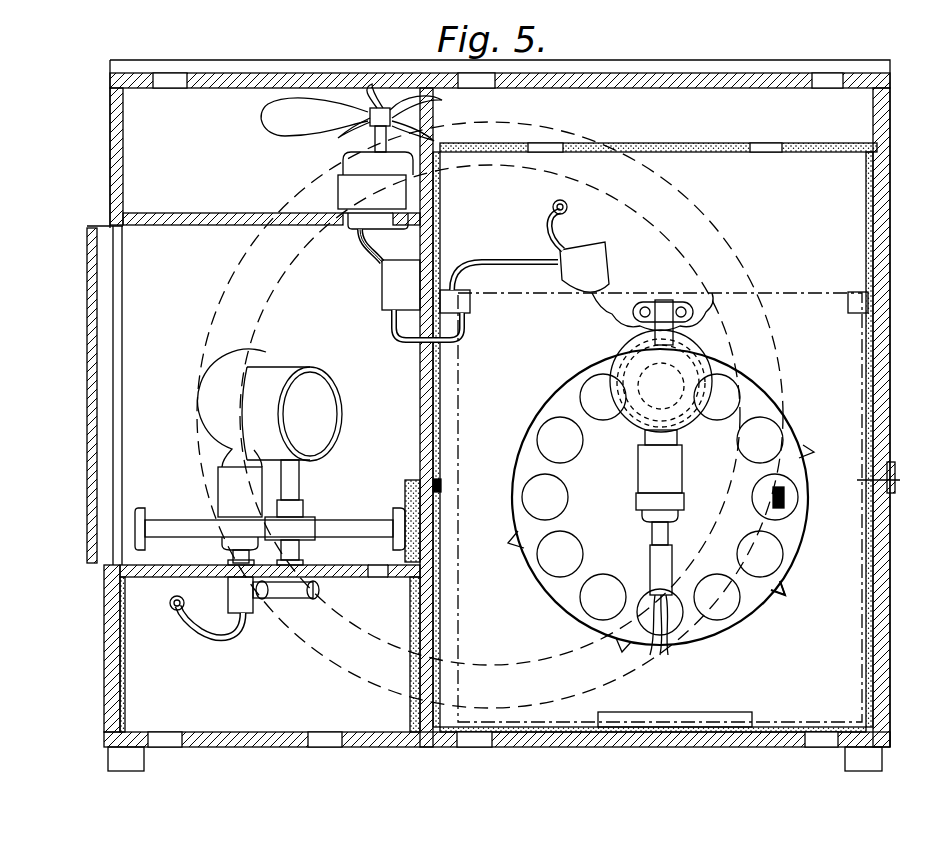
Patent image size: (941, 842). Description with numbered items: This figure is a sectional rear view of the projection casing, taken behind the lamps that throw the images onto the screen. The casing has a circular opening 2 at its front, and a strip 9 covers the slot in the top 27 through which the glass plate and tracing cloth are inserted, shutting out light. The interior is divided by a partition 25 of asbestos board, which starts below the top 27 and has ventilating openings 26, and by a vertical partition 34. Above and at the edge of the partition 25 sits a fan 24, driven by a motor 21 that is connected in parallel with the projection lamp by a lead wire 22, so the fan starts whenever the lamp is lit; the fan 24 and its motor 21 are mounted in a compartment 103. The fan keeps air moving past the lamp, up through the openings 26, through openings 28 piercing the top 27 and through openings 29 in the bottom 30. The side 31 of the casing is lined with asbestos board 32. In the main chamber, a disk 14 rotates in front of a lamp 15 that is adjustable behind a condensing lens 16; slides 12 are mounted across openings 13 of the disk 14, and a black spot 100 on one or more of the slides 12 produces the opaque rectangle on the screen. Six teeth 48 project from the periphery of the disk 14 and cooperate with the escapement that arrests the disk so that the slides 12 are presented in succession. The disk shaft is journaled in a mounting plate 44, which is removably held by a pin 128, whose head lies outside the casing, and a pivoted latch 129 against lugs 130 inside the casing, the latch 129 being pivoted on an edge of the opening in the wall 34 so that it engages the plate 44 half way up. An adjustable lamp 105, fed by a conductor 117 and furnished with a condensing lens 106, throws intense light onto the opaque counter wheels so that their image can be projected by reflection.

The circular opening 2 is at (653, 439).
The strip 9 is at (318, 62).
The slide 12 is at (792, 497).
The opening 13 is at (798, 504).
The disk 14 is at (771, 582).
The lamp 15 is at (622, 346).
The condensing lens 16 is at (690, 350).
The motor 21 is at (340, 186).
The lead wire 22 is at (548, 222).
The fan 24 is at (272, 126).
The partition 25 is at (648, 147).
The ventilating openings 26 is at (566, 147).
The top 27 is at (565, 74).
The openings 28 is at (170, 83).
The openings 29 is at (165, 748).
The bottom 30 is at (618, 748).
The side 31 is at (880, 630).
The asbestos board 32 is at (868, 672).
The vertical partition 34 is at (442, 592).
The mounting plate 44 is at (798, 293).
The teeth 48 is at (560, 393).
The black spot 100 is at (783, 512).
The compartment 103 is at (271, 395).
The adjustable lamp 105 is at (196, 396).
The condensing lens 106 is at (334, 408).
The conductor 117 is at (230, 623).
The pin 128 is at (895, 480).
The pivoted latch 129 is at (442, 490).
The lugs 130 is at (462, 300).